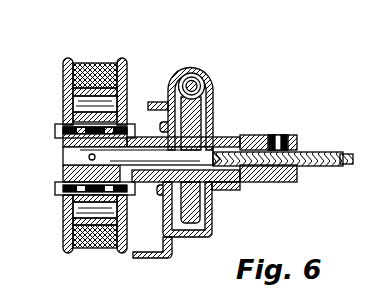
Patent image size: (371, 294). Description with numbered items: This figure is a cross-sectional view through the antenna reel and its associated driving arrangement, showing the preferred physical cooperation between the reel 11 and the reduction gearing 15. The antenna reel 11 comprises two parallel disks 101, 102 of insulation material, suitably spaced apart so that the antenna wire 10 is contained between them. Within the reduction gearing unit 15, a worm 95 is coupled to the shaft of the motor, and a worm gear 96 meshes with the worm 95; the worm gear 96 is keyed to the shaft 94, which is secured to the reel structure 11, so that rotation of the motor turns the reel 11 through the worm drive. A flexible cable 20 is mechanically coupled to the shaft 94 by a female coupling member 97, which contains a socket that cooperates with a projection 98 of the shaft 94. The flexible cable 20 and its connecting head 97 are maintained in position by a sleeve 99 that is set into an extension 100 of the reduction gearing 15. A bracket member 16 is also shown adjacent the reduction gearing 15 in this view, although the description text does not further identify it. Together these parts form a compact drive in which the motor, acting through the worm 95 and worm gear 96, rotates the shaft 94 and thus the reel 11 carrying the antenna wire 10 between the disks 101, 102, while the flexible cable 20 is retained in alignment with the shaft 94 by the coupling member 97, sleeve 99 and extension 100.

The antenna wire 10 is at (74, 78).
The antenna reel 11 is at (152, 77).
The reduction gearing 15 is at (204, 72).
The bracket arm 16 is at (169, 258).
The flexible cable 20 is at (338, 152).
The shaft 94 is at (64, 157).
The worm 95 is at (205, 88).
The worm gear 96 is at (201, 205).
The female coupling member 97 is at (250, 190).
The projection 98 is at (226, 137).
The sleeve 99 is at (306, 170).
The extension 100 is at (262, 135).
The disk 101 is at (66, 251).
The disk 102 is at (118, 251).